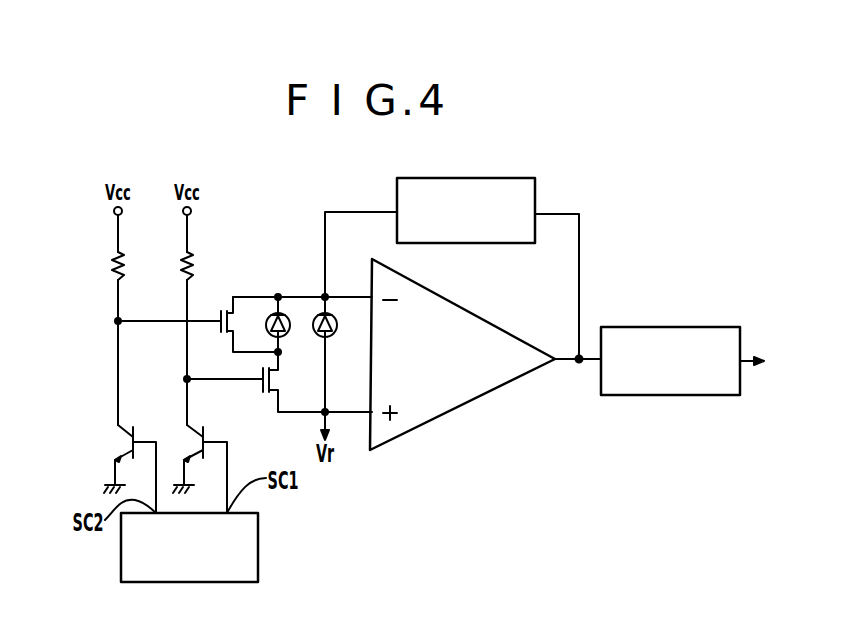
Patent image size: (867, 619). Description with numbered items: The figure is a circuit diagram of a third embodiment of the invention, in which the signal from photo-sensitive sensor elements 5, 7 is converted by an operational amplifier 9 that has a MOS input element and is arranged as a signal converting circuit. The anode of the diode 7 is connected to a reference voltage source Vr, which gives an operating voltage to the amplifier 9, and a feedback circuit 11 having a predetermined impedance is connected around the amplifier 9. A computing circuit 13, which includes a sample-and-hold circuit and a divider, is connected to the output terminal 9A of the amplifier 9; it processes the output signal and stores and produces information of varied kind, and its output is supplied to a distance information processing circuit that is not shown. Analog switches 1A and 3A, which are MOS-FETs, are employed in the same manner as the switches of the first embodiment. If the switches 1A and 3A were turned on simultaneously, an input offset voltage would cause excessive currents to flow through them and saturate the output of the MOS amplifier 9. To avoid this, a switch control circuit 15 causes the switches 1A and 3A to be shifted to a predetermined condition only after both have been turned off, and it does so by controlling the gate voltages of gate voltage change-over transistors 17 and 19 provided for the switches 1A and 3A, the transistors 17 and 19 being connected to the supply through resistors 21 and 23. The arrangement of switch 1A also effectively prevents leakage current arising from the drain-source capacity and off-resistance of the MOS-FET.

The analog switch 1A is at (241, 337).
The analog switch 3A is at (288, 399).
The sensor element 5 is at (285, 347).
The sensor element 7 is at (334, 354).
The operational amplifier 9 is at (462, 354).
The output terminal of operational amplifier 9A is at (578, 396).
The feedback circuit 11 is at (466, 178).
The computing circuit 13 is at (682, 326).
The switch control circuit 15 is at (220, 547).
The gate voltage change-over transistor 17 is at (109, 467).
The gate voltage change-over transistor 19 is at (189, 453).
The first resistor 21 is at (90, 266).
The second resistor 23 is at (219, 267).